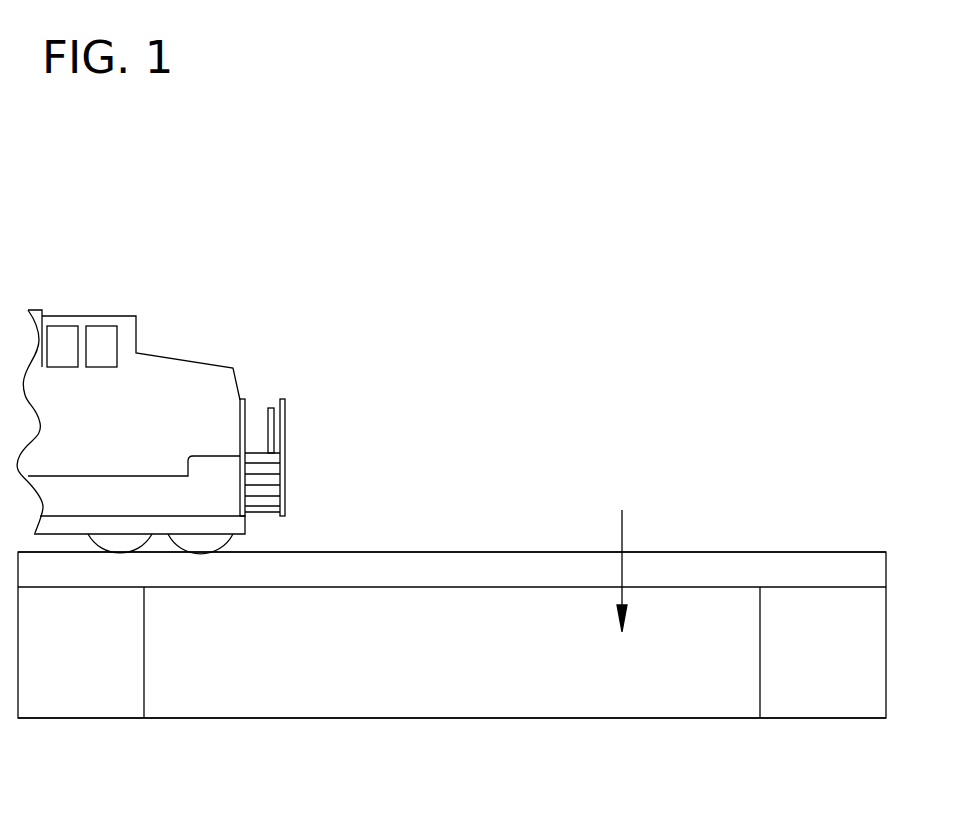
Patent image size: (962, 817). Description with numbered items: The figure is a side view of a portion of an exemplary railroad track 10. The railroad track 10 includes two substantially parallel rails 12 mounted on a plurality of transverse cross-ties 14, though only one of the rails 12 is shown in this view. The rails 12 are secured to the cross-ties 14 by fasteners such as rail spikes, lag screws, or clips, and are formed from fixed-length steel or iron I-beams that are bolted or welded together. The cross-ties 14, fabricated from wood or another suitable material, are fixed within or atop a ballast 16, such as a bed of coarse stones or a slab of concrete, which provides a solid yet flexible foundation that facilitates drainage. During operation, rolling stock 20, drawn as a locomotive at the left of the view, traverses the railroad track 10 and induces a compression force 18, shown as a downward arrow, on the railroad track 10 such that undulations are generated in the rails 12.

The railroad track 10 is at (660, 390).
The rails 12 is at (428, 552).
The cross-ties 14 is at (144, 643).
The ballast 16 is at (365, 718).
The compression force 18 is at (622, 518).
The rolling stock 20 is at (210, 318).